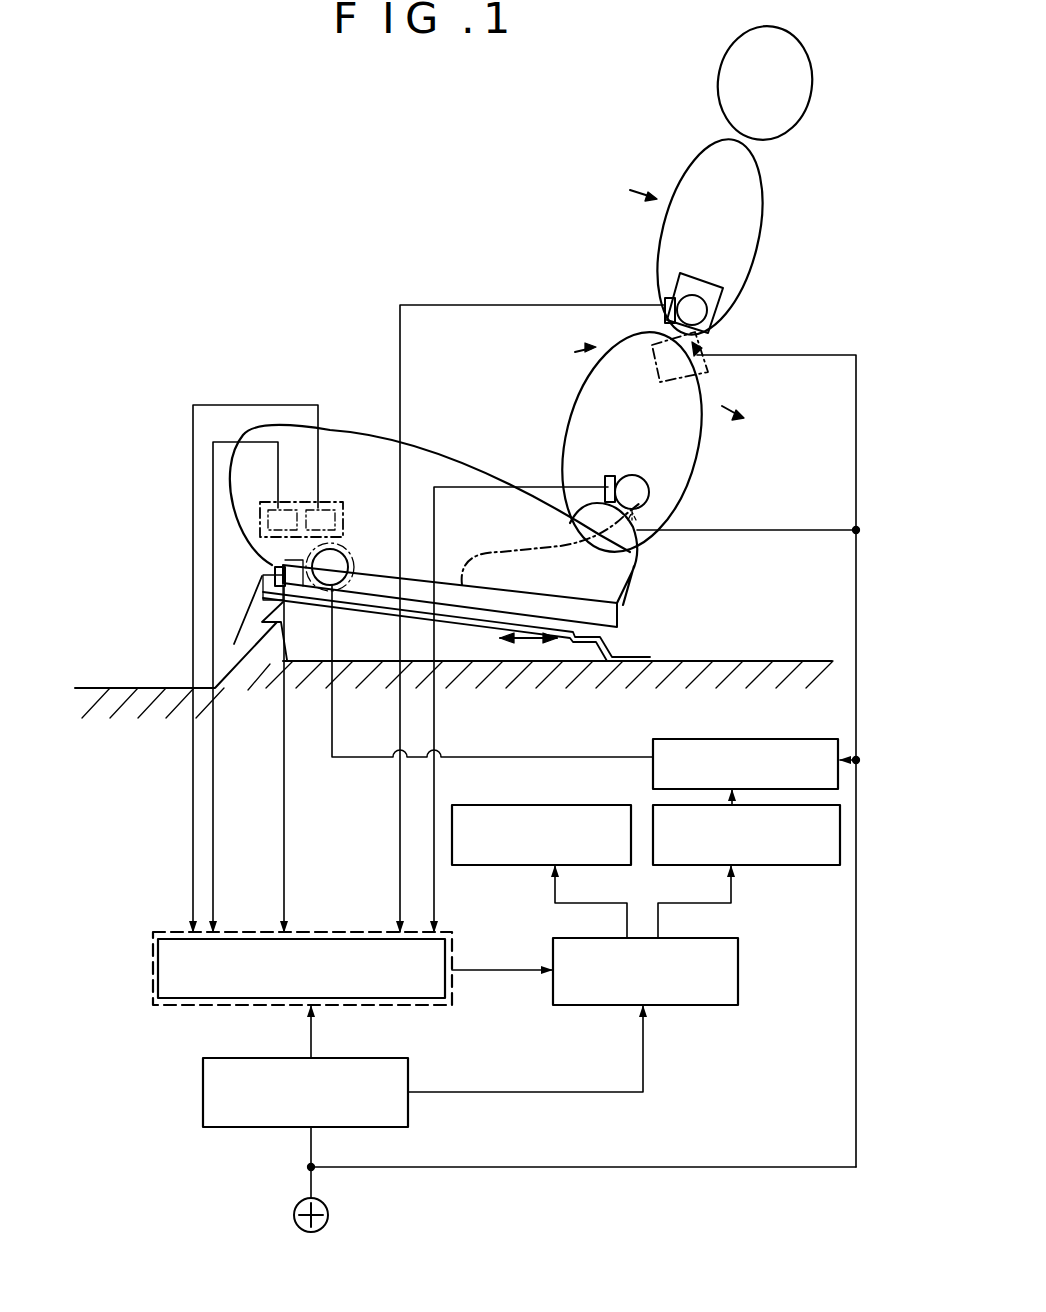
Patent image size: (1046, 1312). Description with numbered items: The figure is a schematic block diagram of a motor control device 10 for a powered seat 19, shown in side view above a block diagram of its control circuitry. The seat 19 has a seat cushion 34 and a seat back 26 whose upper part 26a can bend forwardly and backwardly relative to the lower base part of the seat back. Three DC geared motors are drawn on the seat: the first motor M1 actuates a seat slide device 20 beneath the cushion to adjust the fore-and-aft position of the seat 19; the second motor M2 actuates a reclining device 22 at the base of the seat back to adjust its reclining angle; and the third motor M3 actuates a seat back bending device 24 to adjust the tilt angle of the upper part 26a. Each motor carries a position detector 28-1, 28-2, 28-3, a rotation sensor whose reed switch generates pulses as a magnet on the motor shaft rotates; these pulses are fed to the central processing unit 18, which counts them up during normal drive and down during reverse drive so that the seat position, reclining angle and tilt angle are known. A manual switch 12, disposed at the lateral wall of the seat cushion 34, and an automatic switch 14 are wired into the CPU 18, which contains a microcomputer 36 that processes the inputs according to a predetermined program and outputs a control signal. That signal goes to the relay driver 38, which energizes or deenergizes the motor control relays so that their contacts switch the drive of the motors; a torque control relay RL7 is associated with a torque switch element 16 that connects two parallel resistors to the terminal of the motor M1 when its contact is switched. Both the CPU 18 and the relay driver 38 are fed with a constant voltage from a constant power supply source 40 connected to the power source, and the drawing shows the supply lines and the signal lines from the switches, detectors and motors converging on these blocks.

The motor control device 10 is at (110, 505).
The manual switch 12 is at (264, 531).
The automatic switch 14 is at (312, 507).
The torque switch element 16 is at (668, 739).
The central processing unit 18 is at (153, 1002).
The powered seat 19 is at (498, 385).
The seat slide device 20 is at (368, 610).
The reclining device 22 is at (652, 557).
The seat back bending device 24 is at (724, 335).
The seat back 26 is at (611, 350).
The upper part of the seat back 26a is at (756, 212).
The position detector 28-1 is at (307, 590).
The position detector 28-2 is at (607, 478).
The position detector 28-3 is at (661, 296).
The seat cushion 34 is at (362, 442).
The microcomputer 36 is at (204, 990).
The relay driver 38 is at (720, 1005).
The constant power supply source 40 is at (233, 1127).
The motor M1 is at (350, 568).
The motor M2 is at (637, 475).
The motor M3 is at (696, 292).
The torque control relay RL7 is at (790, 866).